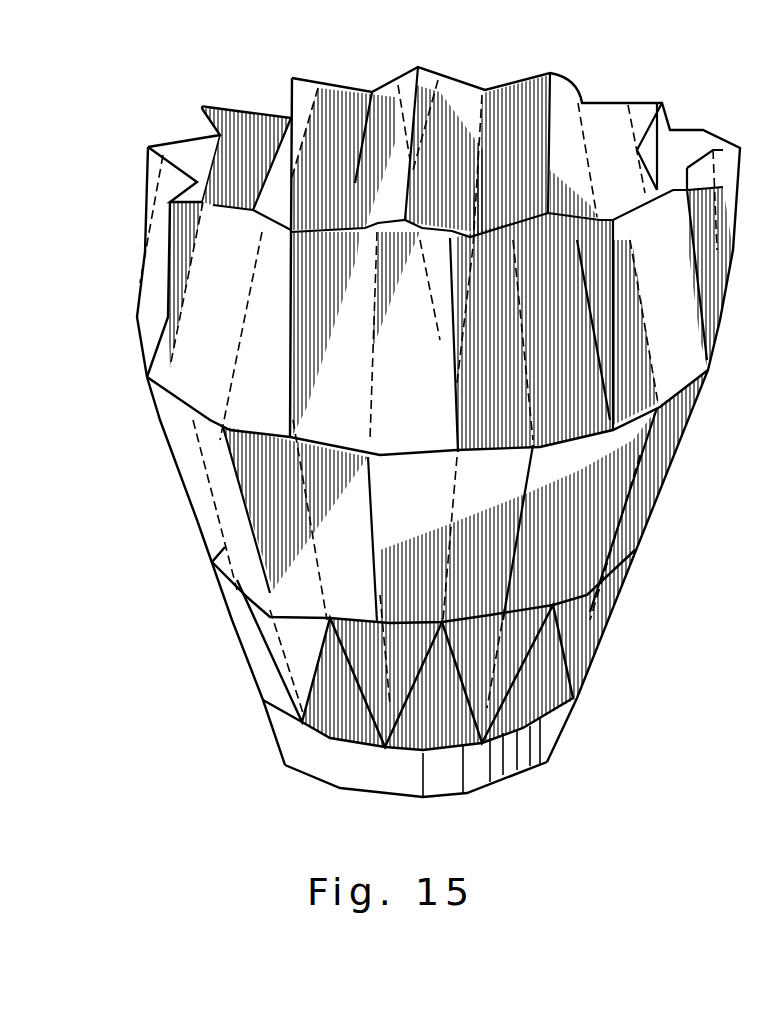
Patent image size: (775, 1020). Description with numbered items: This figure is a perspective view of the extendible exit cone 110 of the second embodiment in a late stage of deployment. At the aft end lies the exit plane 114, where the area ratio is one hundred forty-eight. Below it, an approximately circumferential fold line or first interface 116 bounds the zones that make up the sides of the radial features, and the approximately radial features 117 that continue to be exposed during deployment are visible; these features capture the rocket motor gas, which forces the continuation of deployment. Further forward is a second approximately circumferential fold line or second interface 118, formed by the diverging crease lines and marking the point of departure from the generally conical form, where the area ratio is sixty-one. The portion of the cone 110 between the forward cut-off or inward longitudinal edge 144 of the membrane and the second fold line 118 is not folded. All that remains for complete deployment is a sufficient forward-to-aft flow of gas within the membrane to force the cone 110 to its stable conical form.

The extendible exit cone 110 is at (223, 618).
The exit plane 114 is at (617, 102).
The first interface 116 is at (213, 422).
The radial features 117 is at (282, 158).
The second interface 118 is at (225, 547).
The inward longitudinal edge 144 is at (528, 773).